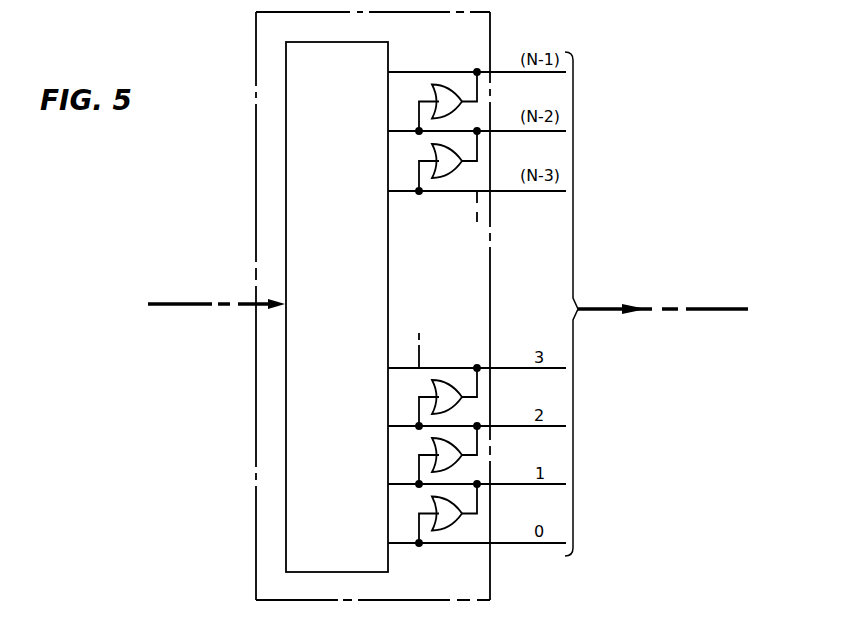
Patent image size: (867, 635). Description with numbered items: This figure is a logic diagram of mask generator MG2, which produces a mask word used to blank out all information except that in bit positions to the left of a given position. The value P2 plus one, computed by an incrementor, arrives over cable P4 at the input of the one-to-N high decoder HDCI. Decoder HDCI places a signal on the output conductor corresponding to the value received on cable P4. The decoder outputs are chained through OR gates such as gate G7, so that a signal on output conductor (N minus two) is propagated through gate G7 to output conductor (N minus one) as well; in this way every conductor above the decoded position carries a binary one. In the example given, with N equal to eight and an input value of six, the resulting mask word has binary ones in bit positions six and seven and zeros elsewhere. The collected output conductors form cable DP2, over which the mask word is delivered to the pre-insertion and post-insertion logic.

The mask generator MG2 is at (256, 158).
The 1:N decoder HDCI is at (337, 295).
The gate G7 is at (436, 93).
The cable P4 is at (187, 303).
The cable DP2 is at (693, 308).